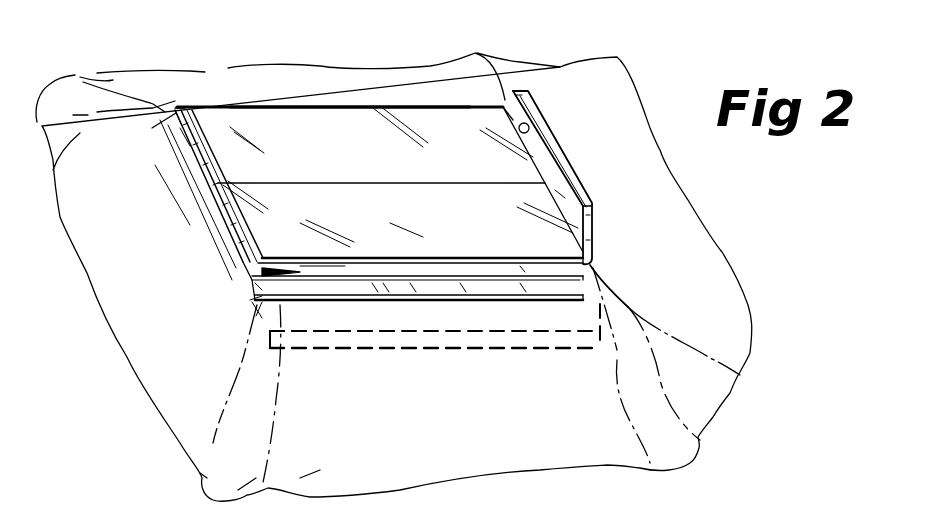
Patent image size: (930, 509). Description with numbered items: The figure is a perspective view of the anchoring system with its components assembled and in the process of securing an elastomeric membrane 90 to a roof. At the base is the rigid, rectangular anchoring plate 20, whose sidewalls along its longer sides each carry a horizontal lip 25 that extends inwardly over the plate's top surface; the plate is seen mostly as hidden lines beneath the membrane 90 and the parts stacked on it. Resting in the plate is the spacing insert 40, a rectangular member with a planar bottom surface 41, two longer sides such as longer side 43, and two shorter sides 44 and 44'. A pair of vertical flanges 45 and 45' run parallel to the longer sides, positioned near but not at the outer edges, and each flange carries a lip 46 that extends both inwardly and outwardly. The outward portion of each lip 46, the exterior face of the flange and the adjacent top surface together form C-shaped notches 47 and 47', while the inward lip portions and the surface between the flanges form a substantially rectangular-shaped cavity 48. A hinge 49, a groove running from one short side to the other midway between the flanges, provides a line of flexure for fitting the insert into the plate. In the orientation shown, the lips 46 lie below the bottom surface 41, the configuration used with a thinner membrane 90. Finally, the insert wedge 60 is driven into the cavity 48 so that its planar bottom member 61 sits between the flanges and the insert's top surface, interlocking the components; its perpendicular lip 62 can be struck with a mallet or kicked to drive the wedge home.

The anchoring plate 20 is at (450, 347).
The horizontal lip 25 is at (340, 322).
The spacing insert 40 is at (292, 142).
The planar bottom surface 41 is at (361, 78).
The longer side 43 is at (498, 262).
The shorter side 44 is at (188, 143).
The shorter side 44' is at (564, 110).
The vertical flange 45 is at (231, 275).
The vertical flange 45' is at (143, 151).
The lip 46 is at (252, 289).
The C-shaped notch 47 is at (216, 325).
The C-shaped notch 47' is at (129, 130).
The rectangular-shaped cavity 48 is at (205, 200).
The hinge 49 is at (217, 187).
The insert wedge 60 is at (578, 147).
The planar bottom member 61 is at (206, 213).
The lip 62 is at (588, 229).
The elastomeric membrane 90 is at (616, 68).